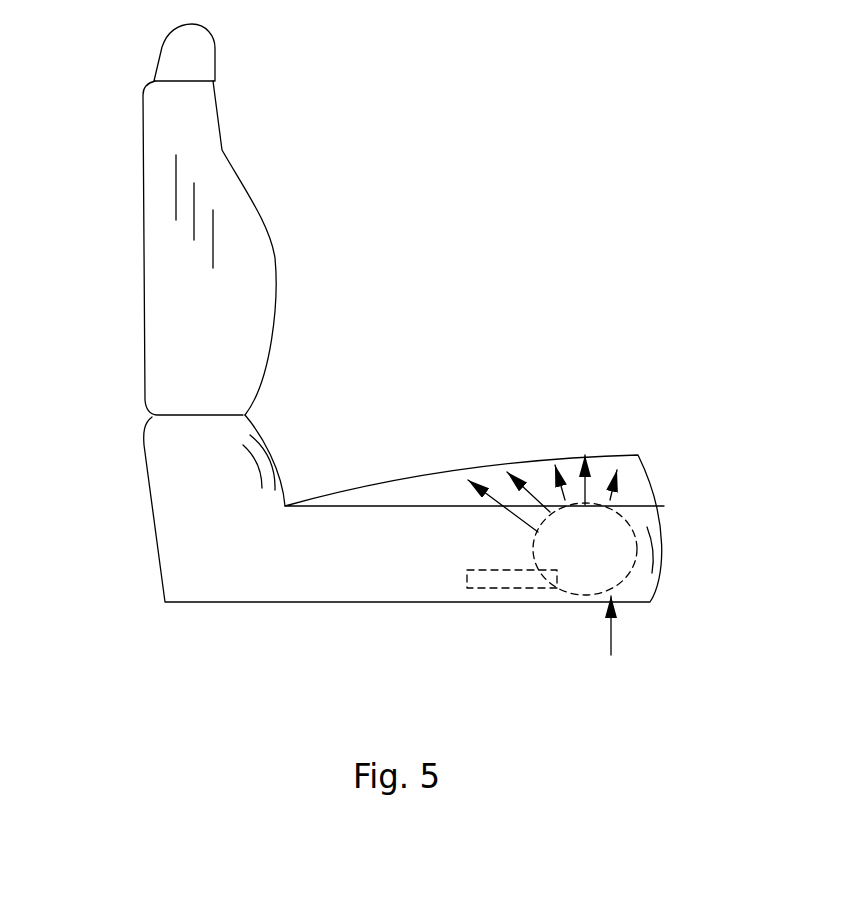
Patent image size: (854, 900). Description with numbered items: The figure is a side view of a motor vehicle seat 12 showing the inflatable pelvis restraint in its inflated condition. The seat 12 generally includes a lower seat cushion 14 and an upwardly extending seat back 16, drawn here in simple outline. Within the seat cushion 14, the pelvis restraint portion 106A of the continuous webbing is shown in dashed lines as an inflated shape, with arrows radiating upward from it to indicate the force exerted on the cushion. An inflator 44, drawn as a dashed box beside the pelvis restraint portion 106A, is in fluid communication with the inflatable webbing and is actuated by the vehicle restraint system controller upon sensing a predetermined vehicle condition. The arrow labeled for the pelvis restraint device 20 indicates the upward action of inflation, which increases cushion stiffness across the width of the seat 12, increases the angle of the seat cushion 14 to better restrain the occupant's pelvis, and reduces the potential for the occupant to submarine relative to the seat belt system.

The seat 12 is at (140, 210).
The seat back 16 is at (273, 258).
The seat cushion 14 is at (337, 560).
The pelvis restraint portion 106A is at (625, 518).
The inflator 44 is at (493, 588).
The inflatable pelvis restraint device 20 is at (609, 645).